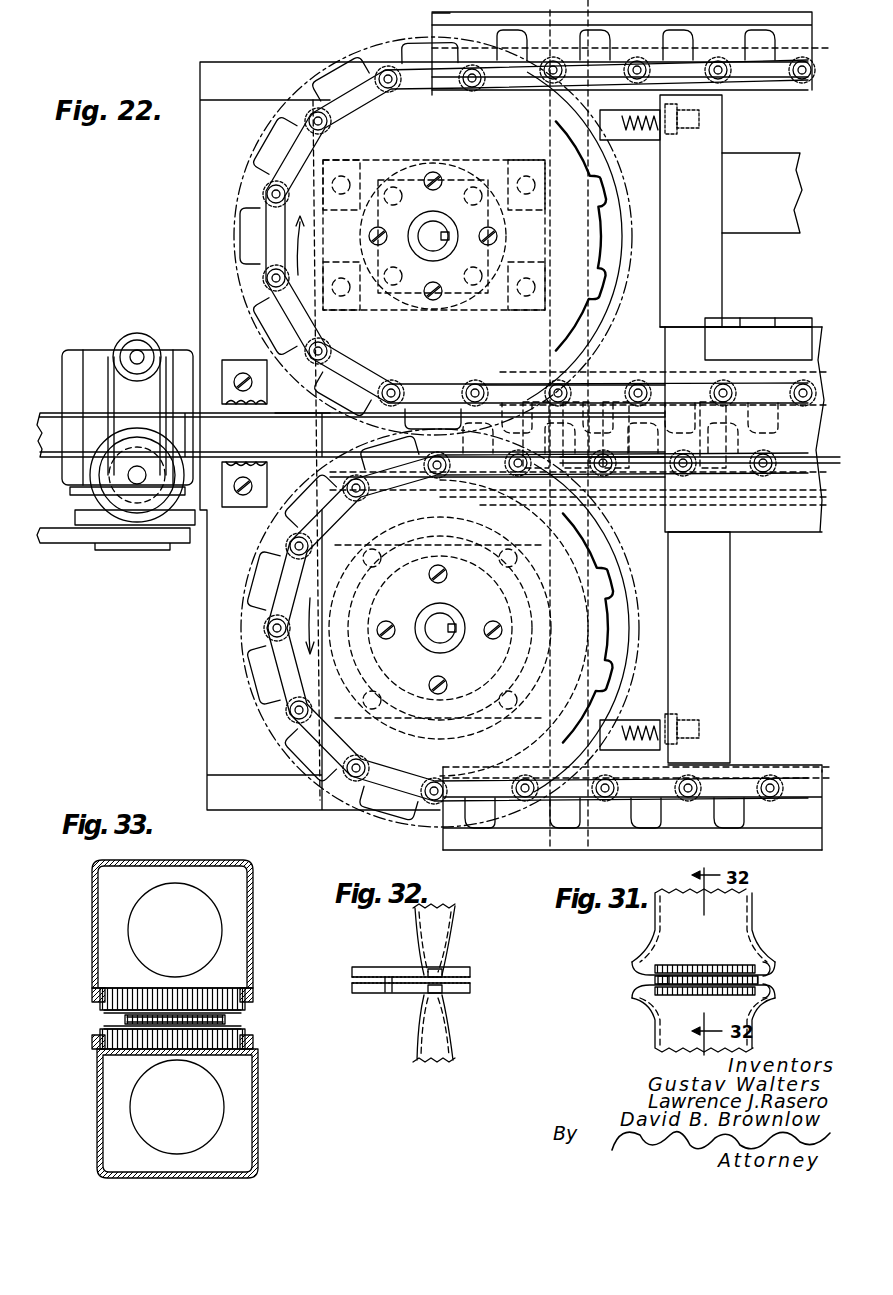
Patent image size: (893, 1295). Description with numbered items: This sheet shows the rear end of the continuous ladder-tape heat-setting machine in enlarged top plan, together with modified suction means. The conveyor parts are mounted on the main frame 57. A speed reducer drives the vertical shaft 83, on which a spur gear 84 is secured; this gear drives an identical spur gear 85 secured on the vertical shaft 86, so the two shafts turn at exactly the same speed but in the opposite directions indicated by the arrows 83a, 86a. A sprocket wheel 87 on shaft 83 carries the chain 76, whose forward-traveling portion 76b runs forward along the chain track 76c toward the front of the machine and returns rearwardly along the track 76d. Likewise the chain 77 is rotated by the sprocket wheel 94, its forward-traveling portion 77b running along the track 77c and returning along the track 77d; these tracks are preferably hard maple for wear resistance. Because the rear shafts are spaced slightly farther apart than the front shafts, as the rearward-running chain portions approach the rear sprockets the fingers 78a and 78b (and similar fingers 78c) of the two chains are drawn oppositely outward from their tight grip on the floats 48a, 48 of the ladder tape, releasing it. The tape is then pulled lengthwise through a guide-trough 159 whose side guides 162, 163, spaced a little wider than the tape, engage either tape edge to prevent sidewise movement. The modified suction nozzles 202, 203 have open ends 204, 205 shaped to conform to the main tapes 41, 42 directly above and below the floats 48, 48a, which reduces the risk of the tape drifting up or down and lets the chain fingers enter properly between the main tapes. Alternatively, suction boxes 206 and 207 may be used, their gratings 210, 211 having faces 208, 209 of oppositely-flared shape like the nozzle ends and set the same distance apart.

In FIG. 22, the main frame 57 is at (205, 590).
In FIG. 22, the chain 76 is at (285, 672).
In FIG. 22, the forward-traveling portion of chain 76b is at (654, 835).
In FIG. 22, the chain track 76c is at (566, 840).
In FIG. 22, the chain track 76d is at (612, 492).
In FIG. 22, the chain 77 is at (272, 232).
In FIG. 22, the forward-traveling portion of chain 77b is at (700, 76).
In FIG. 22, the chain track 77c is at (432, 14).
In FIG. 22, the chain track 77d is at (604, 376).
In FIG. 22, the fingers 78a is at (583, 432).
In FIG. 22, the fingers 78b is at (605, 440).
In FIG. 22, the can body in pocket 78c is at (536, 424).
In FIG. 22, the float 48 is at (642, 456).
In FIG. 33, the float 48 is at (125, 1019).
In FIG. 32, the float 48 is at (386, 993).
In FIG. 31, the float 48 is at (655, 980).
In FIG. 22, the float 48a is at (700, 445).
In FIG. 33, the float 48a is at (226, 1019).
In FIG. 31, the float 48a is at (760, 979).
In FIG. 22, the vertical shaft 83 is at (447, 622).
In FIG. 22, the arrow 83a is at (316, 600).
In FIG. 22, the spur gear 84 is at (620, 586).
In FIG. 22, the spur gear 85 is at (617, 178).
In FIG. 22, the vertical shaft 86 is at (440, 229).
In FIG. 22, the arrow 86a is at (302, 240).
In FIG. 22, the sprocket wheel 87 is at (616, 608).
In FIG. 22, the sprocket wheel 94 is at (600, 214).
In FIG. 22, the guide-trough 159 is at (272, 380).
In FIG. 22, the side guide 162 is at (262, 462).
In FIG. 22, the side guide 163 is at (290, 406).
In FIG. 32, the suction nozzle 202 is at (445, 926).
In FIG. 31, the suction nozzle 202 is at (745, 903).
In FIG. 32, the suction nozzle 203 is at (461, 1028).
In FIG. 31, the suction nozzle 203 is at (757, 1040).
In FIG. 32, the open end 204 is at (442, 967).
In FIG. 31, the open end 204 is at (733, 965).
In FIG. 32, the open end 205 is at (444, 994).
In FIG. 31, the open end 205 is at (738, 988).
In FIG. 33, the suction box 206 is at (238, 882).
In FIG. 33, the suction box 207 is at (245, 1127).
In FIG. 33, the face of grating 208 is at (240, 1011).
In FIG. 33, the face of grating 209 is at (240, 1028).
In FIG. 33, the grating 210 is at (212, 990).
In FIG. 33, the grating 211 is at (212, 1040).
In FIG. 32, the main tape 41 is at (472, 973).
In FIG. 31, the main tape 41 is at (776, 964).
In FIG. 32, the main tape 42 is at (472, 987).
In FIG. 31, the main tape 42 is at (778, 992).